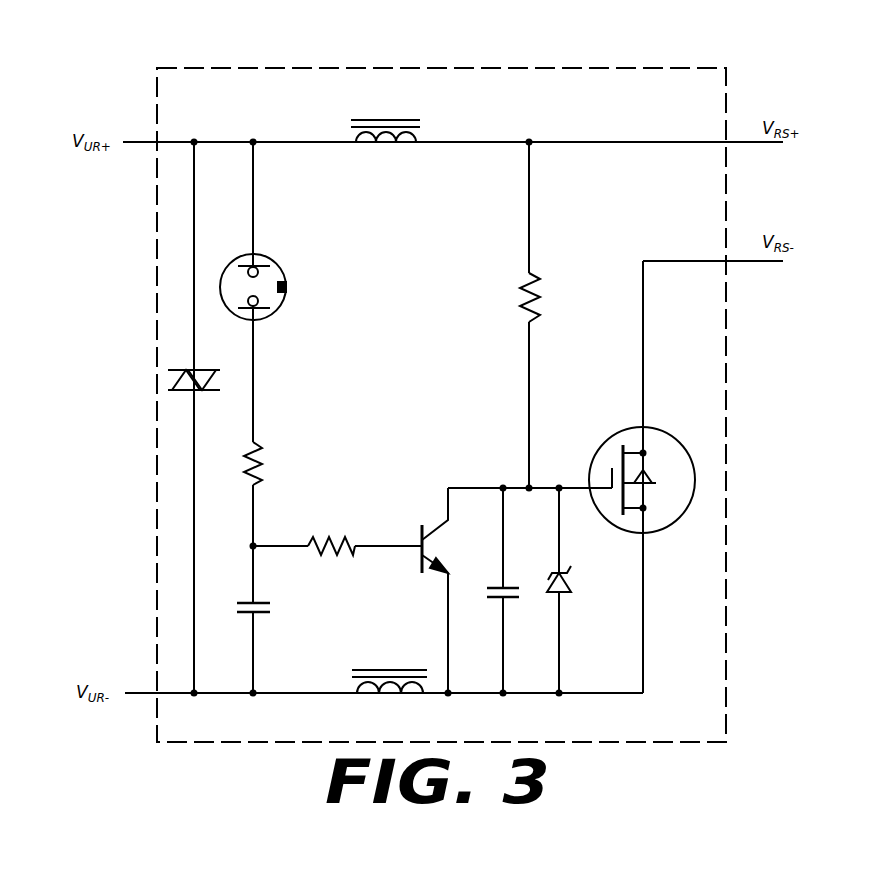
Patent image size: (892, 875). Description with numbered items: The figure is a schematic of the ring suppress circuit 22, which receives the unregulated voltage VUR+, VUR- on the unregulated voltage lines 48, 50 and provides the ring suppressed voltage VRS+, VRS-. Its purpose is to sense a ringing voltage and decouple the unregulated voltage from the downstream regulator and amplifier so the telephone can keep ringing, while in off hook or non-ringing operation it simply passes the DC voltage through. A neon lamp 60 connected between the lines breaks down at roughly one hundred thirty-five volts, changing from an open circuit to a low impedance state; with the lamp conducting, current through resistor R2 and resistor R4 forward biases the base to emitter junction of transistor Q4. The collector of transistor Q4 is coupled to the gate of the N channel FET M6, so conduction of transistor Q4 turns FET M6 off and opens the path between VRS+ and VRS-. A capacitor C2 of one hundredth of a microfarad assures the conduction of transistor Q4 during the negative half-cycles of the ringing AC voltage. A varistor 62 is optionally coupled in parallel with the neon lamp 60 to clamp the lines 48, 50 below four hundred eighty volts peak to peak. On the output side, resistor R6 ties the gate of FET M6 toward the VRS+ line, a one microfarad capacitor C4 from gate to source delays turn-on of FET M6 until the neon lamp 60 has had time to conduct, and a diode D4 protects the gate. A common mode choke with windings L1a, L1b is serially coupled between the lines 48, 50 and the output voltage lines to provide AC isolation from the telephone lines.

The ring suppress circuit 22 is at (428, 68).
The unregulated voltage line 48 is at (173, 141).
The unregulated voltage line 50 is at (168, 691).
The neon lamp 60 is at (276, 263).
The varistor 62 is at (208, 368).
The choke winding L1a is at (385, 147).
The choke winding L1b is at (389, 697).
The resistor R2 is at (262, 458).
The resistor R4 is at (334, 540).
The resistor R6 is at (536, 288).
The capacitor C2 is at (270, 605).
The capacitor C4 is at (510, 588).
The diode D4 is at (576, 570).
The transistor Q4 is at (426, 548).
The FET M6 is at (672, 432).